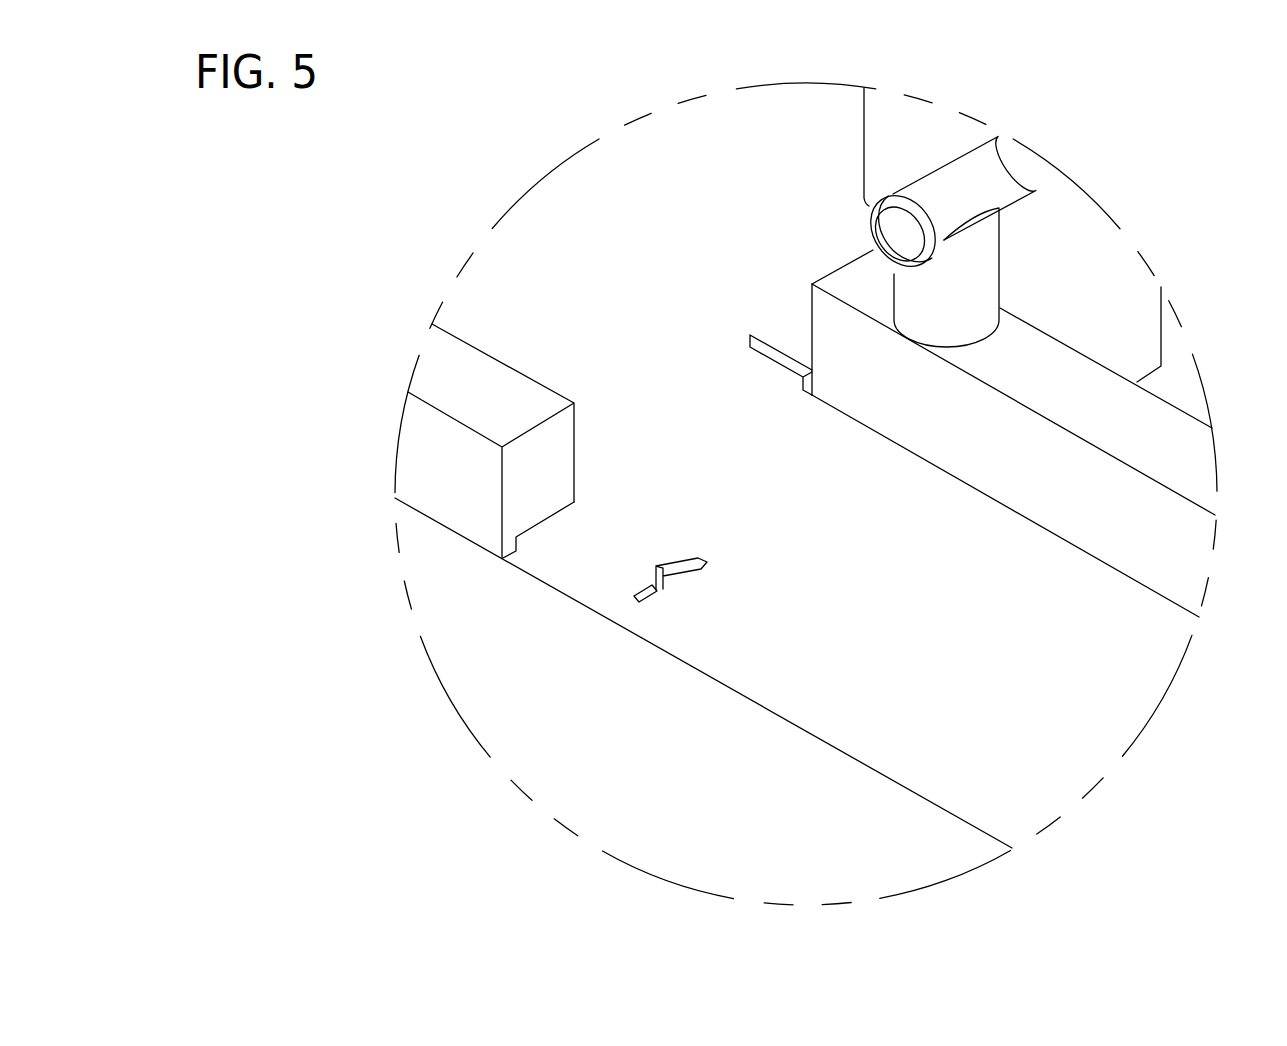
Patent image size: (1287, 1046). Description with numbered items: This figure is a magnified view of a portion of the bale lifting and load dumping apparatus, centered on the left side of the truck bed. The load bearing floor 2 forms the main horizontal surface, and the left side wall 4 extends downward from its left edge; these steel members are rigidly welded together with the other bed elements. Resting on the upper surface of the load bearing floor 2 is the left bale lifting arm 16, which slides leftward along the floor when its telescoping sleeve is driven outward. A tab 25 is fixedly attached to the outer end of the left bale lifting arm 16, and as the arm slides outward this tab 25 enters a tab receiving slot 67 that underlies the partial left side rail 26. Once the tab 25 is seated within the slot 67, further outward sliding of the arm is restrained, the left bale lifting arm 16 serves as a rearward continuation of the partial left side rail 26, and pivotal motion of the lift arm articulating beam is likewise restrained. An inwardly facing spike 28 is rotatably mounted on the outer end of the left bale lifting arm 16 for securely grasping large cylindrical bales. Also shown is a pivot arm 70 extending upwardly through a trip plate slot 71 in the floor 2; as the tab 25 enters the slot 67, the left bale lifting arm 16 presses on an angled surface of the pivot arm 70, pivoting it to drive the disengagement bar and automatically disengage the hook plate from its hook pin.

The load bearing floor 2 is at (1015, 682).
The left side wall 4 is at (830, 828).
The left bale lifting arm 16 is at (1143, 425).
The tab 25 is at (795, 332).
The partial left side rail 26 is at (473, 480).
The inwardly facing spike 28 is at (1053, 278).
The tab receiving slot 67 is at (542, 530).
The pivot arm 70 is at (672, 570).
The trip plate slot 71 is at (633, 597).